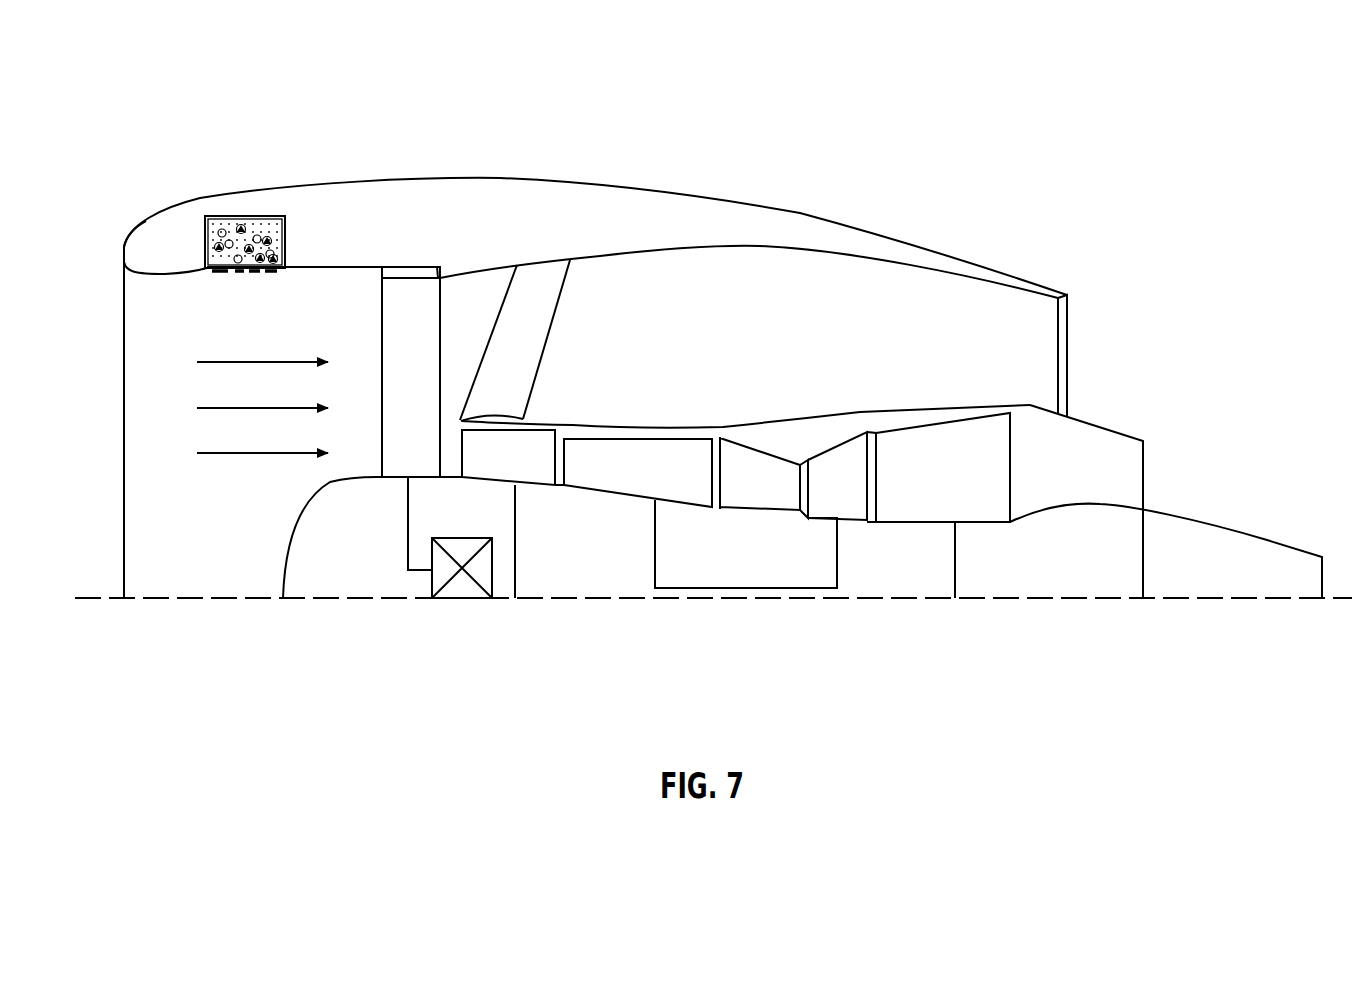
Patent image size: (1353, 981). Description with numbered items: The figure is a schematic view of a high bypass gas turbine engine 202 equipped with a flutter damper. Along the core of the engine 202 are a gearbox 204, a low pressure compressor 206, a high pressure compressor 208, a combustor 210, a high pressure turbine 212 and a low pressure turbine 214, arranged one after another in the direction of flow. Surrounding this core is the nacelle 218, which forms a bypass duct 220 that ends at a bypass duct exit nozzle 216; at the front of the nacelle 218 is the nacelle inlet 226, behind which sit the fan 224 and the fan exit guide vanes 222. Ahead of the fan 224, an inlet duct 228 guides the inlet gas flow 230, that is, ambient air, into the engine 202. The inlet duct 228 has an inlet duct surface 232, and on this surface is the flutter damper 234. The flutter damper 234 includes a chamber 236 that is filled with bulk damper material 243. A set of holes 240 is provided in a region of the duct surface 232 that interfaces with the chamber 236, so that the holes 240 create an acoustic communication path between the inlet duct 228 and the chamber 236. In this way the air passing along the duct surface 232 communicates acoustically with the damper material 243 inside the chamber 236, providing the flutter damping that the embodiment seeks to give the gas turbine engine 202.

The high bypass gas turbine engine 202 is at (709, 123).
The gearbox 204 is at (462, 570).
The low pressure compressor 206 is at (523, 467).
The high pressure compressor 208 is at (660, 477).
The combustor 210 is at (770, 503).
The high pressure turbine 212 is at (848, 472).
The low pressure turbine 214 is at (980, 483).
The bypass duct exit nozzle 216 is at (1027, 345).
The nacelle 218 is at (765, 232).
The bypass duct 220 is at (668, 275).
The fan exit guide vanes 222 is at (537, 275).
The fan 224 is at (420, 312).
The nacelle inlet 226 is at (153, 243).
The inlet duct 228 is at (153, 472).
The inlet gas flow 230 is at (223, 405).
The inlet duct surface 232 is at (147, 273).
The flutter damper 234 is at (182, 224).
The chamber 236 is at (245, 228).
The set of holes 240 is at (232, 284).
The bulk damper material 243 is at (268, 231).